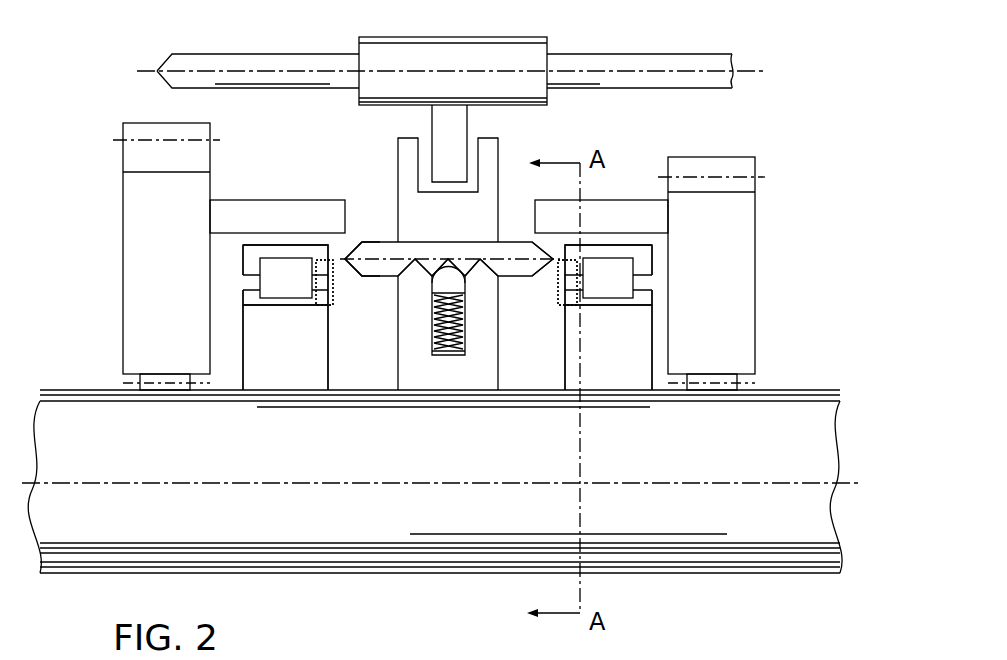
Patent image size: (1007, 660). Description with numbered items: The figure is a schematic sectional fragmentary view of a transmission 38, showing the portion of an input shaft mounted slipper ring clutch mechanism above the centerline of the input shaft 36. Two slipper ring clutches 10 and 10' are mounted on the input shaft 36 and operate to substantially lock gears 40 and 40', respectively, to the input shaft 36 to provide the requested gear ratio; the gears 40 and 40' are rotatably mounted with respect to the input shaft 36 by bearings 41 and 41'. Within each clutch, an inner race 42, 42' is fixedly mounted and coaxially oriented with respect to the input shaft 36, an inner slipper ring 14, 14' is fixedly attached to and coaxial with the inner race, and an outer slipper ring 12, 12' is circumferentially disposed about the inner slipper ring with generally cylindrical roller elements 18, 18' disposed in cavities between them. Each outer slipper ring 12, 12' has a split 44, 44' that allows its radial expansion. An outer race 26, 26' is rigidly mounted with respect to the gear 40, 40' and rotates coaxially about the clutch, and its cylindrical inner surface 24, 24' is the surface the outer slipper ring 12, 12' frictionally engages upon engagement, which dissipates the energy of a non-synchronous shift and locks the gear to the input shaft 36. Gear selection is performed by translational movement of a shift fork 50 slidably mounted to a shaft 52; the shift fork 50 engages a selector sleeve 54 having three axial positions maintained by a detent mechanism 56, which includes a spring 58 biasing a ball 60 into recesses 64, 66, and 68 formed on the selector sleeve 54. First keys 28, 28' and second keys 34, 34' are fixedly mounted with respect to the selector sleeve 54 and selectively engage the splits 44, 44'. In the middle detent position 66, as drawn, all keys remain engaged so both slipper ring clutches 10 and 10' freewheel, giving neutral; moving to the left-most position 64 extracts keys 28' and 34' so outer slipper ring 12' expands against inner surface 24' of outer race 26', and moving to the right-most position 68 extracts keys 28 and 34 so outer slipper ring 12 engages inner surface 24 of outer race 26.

The slipper ring clutch 10 is at (580, 317).
The slipper ring clutch 10' is at (245, 317).
The outer slipper ring 12 is at (694, 246).
The outer slipper ring 12' is at (197, 246).
The inner slipper ring 14 is at (694, 289).
The inner slipper ring 14' is at (197, 289).
The roller element 18 is at (703, 272).
The roller element 18' is at (189, 272).
The cylindrical inner surface 24 is at (582, 232).
The cylindrical inner surface 24' is at (335, 215).
The outer race 26 is at (601, 193).
The outer race 26' is at (277, 193).
The first key 28 is at (599, 240).
The first key 28' is at (302, 313).
The second key 34 is at (584, 250).
The second key 34' is at (326, 301).
The input shaft 36 is at (752, 577).
The transmission 38 is at (95, 85).
The gear 40 is at (741, 265).
The gear 40' is at (143, 248).
The bearing 41 is at (746, 374).
The bearing 41' is at (138, 374).
The inner race 42 is at (694, 346).
The inner race 42' is at (197, 346).
The split 44 is at (531, 239).
The split 44' is at (359, 239).
The shift fork 50 is at (504, 37).
The shaft 52 is at (655, 54).
The selector sleeve 54 is at (498, 152).
The detent mechanism 56 is at (380, 291).
The spring 58 is at (433, 350).
The ball 60 is at (432, 295).
The recess 64 is at (415, 242).
The recess 66 is at (448, 242).
The recess 68 is at (480, 242).